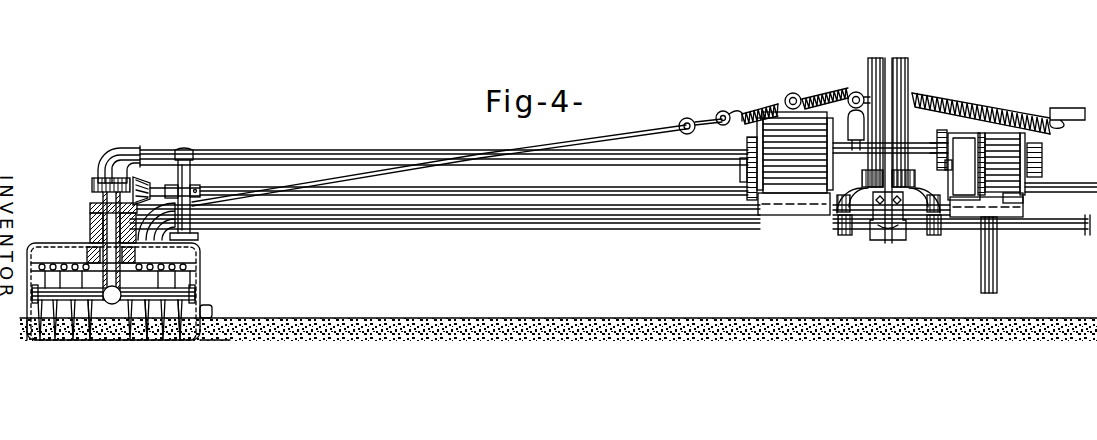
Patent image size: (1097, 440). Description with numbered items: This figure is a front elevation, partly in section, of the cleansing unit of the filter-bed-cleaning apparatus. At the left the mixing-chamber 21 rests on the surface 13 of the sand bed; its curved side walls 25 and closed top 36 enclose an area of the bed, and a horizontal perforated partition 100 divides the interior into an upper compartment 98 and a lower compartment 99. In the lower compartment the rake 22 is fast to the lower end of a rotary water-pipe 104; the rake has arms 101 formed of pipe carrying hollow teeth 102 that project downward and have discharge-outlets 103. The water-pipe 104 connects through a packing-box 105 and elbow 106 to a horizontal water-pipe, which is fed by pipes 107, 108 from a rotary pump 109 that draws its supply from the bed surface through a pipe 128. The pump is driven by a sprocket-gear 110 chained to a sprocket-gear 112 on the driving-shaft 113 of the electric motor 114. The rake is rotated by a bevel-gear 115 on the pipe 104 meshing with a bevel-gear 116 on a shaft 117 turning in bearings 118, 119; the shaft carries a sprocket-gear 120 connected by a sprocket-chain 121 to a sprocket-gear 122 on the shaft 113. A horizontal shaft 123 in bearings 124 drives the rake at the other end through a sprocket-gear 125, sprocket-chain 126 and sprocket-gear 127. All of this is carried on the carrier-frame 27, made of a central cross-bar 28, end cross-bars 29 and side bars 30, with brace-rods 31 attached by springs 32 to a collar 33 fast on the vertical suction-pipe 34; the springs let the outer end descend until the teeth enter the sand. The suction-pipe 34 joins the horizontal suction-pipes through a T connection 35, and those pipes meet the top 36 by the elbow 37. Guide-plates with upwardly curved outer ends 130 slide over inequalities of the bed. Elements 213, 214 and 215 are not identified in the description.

The surface 13 is at (585, 318).
The mixing-chamber 21 is at (112, 279).
The rake 22 is at (179, 328).
The curved side walls 25 is at (33, 340).
The carrier-frame 27 is at (543, 234).
The central cross-bar 28 is at (883, 237).
The end cross-bars 29 is at (196, 186).
The side bars 30 is at (590, 229).
The brace-rods 31 is at (612, 137).
The springs 32 is at (830, 99).
The collar 33 is at (912, 99).
The vertical suction-pipe 34 is at (888, 68).
The T connection 35 is at (916, 228).
The top 36 is at (84, 231).
The elbow 37 is at (200, 236).
The upper compartment 98 is at (190, 264).
The lower compartment 99 is at (185, 289).
The horizontal perforated partition 100 is at (185, 272).
The arms 101 is at (183, 301).
The hollow teeth 102 is at (150, 336).
The discharge-outlets 103 is at (95, 338).
The rotary water-pipe 104 is at (103, 197).
The packing-box 105 is at (100, 184).
The elbow 106 is at (118, 160).
The pipe 107 is at (795, 152).
The pipe 108 is at (1083, 110).
The rotary pump 109 is at (1043, 151).
The sprocket-gear 110 is at (944, 173).
The sprocket-gear 112 is at (957, 143).
The driving-shaft 113 is at (936, 157).
The electric motor 114 is at (787, 103).
The bevel-gear 115 is at (92, 208).
The bevel-gear 116 is at (150, 183).
The shaft 117 is at (215, 187).
The bearing 118 is at (192, 189).
The bearing 119 is at (766, 194).
The sprocket-gear 120 is at (746, 186).
The sprocket-chain 121 is at (748, 160).
The sprocket-gear 122 is at (735, 113).
The horizontal shaft 123 is at (1092, 182).
The bearings 124 is at (1005, 200).
The sprocket-gear 125 is at (988, 215).
The sprocket-chain 126 is at (990, 160).
The sprocket-gear 127 is at (978, 142).
The pipe 128 is at (998, 290).
The outer ends 130 is at (214, 316).
The pipe 213 is at (327, 229).
The pipe 214 is at (327, 160).
The ground edge 215 is at (228, 338).